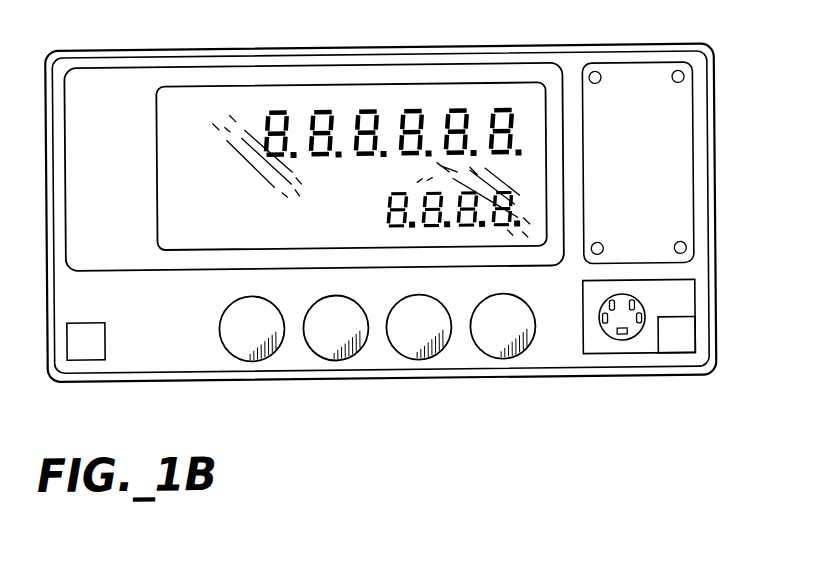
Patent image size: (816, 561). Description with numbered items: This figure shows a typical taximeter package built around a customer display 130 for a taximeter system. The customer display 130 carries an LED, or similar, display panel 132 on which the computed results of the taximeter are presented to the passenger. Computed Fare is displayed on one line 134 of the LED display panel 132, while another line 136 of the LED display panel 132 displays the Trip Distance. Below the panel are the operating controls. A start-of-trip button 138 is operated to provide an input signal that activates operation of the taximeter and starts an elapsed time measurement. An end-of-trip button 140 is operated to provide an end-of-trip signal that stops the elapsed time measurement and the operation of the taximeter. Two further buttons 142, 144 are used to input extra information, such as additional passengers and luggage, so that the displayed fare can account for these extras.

The customer display 130 is at (584, 45).
The LED display panel 132 is at (199, 118).
The line displaying Computed Fare 134 is at (529, 139).
The line displaying Trip Distance 136 is at (528, 210).
The start-of-trip button 138 is at (251, 359).
The end-of-trip button 140 is at (335, 360).
The extra information button 142 is at (418, 360).
The extra information button 144 is at (502, 361).